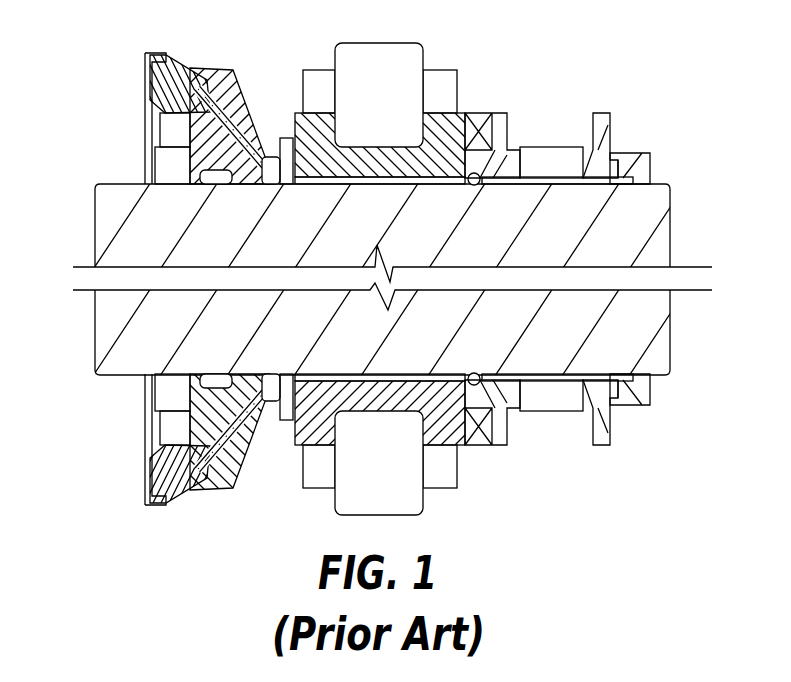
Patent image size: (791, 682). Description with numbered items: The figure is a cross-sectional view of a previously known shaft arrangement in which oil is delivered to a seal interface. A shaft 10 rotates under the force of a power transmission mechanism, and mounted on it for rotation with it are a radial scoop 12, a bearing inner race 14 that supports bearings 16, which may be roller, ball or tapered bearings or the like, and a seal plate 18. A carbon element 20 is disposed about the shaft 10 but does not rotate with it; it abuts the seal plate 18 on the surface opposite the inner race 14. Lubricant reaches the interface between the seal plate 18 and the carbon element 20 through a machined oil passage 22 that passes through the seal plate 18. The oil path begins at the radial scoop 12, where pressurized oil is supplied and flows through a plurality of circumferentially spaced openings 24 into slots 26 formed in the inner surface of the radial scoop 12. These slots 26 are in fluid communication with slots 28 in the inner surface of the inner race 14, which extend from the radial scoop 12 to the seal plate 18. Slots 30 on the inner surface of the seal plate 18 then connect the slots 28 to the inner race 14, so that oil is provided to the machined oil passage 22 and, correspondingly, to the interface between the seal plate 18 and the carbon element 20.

The shaft 10 is at (132, 232).
The radial scoop 12 is at (622, 160).
The bearing inner race 14 is at (455, 167).
The bearings 16 is at (400, 77).
The seal plate 18 is at (217, 73).
The carbon element 20 is at (173, 77).
The machined oil passage 22 is at (243, 93).
The circumferentially spaced openings 24 is at (557, 160).
The slots in inner surface of radial scoop 26 is at (607, 160).
The slots in inner surface of inner race 28 is at (472, 120).
The slots on inner surface of seal plate 30 is at (272, 153).